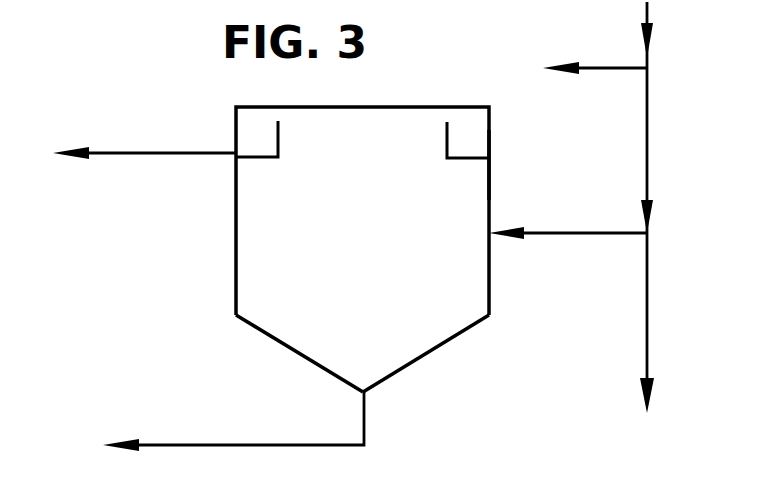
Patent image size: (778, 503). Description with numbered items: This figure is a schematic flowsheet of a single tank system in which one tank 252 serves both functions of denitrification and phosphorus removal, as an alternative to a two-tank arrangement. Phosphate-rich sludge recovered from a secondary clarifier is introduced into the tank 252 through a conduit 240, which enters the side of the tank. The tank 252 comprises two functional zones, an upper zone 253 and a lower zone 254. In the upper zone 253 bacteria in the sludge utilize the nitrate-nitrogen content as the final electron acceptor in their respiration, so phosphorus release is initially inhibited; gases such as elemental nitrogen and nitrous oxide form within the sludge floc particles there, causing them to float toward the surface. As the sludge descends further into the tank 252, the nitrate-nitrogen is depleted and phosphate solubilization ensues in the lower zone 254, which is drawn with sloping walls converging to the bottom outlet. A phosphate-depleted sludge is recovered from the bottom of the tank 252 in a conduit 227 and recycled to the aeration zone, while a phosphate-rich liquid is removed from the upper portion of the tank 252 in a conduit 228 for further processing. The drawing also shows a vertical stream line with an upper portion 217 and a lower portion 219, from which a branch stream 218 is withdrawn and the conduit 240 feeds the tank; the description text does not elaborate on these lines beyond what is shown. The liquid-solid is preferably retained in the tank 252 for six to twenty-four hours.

The feed stream line 217 is at (648, 128).
The withdrawn stream 218 is at (620, 67).
The continuing feed stream 219 is at (648, 305).
The conduit 227 is at (365, 418).
The conduit 228 is at (151, 152).
The conduit 240 is at (564, 232).
The tank 252 is at (363, 249).
The upper zone 253 is at (490, 178).
The lower zone 254 is at (490, 305).